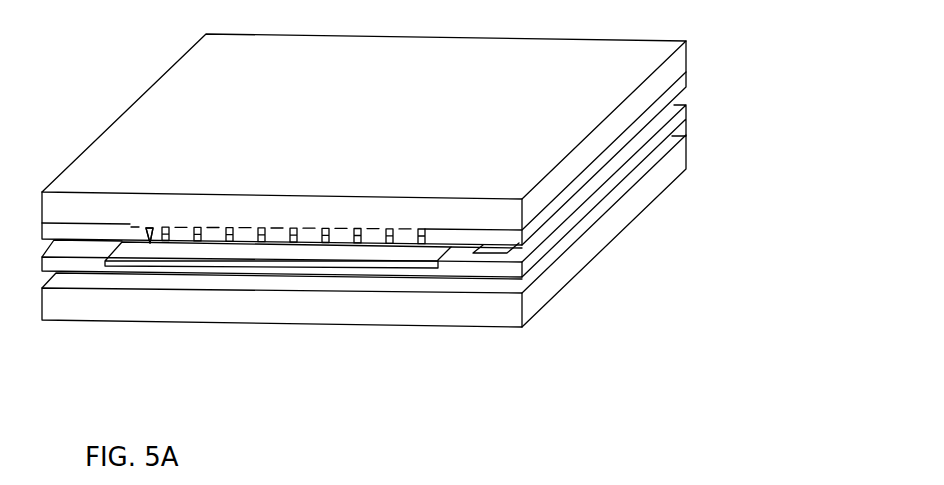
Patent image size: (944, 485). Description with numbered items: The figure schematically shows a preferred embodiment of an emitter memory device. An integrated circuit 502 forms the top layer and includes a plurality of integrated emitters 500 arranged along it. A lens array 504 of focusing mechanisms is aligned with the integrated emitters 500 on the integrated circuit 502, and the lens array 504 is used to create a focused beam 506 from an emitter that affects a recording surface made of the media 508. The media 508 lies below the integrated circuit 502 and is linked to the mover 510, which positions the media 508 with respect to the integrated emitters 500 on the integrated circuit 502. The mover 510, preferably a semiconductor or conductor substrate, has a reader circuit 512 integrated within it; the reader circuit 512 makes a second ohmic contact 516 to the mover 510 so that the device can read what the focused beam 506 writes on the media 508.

The integrated emitters 500 is at (183, 229).
The integrated circuit 502 is at (686, 66).
The lens array 504 is at (389, 229).
The focused beam 506 is at (150, 243).
The media 508 is at (365, 263).
The mover 510 is at (676, 124).
The reader circuit 512 is at (488, 253).
The second ohmic contact 516 is at (672, 180).